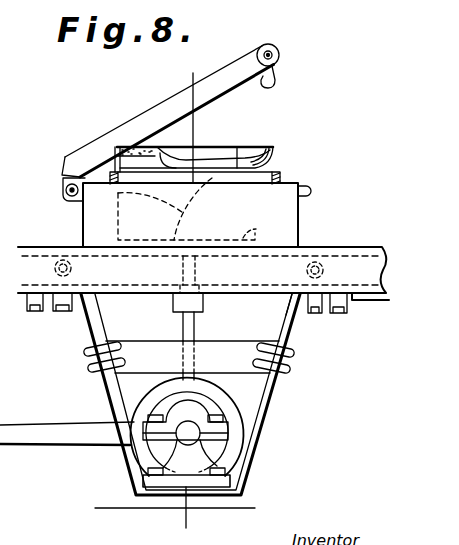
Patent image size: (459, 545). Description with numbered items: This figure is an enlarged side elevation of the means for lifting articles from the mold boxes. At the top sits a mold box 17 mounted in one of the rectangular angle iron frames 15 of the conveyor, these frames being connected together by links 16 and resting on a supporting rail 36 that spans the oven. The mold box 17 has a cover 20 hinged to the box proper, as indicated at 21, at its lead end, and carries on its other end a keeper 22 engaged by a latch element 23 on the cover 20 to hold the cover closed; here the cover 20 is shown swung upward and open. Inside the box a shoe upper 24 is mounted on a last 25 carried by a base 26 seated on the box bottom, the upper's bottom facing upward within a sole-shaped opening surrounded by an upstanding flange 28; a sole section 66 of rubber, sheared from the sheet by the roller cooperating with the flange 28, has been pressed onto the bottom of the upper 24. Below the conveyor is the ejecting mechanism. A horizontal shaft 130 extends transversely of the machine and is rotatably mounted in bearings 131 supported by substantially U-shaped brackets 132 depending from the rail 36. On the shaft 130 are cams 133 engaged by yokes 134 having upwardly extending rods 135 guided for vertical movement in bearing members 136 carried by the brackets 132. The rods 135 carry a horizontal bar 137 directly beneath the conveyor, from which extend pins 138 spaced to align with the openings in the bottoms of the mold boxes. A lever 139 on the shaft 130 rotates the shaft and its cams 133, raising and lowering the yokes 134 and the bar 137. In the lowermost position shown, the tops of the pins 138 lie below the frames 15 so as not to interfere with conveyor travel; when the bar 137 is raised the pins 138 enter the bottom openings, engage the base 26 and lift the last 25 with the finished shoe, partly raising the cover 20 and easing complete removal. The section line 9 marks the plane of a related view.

The section line 9 is at (175, 299).
The cover 20 is at (150, 113).
The latch element 23 is at (281, 77).
The hinge 21 is at (65, 190).
The mold box 17 is at (285, 230).
The keeper 22 is at (309, 191).
The sole section 66 is at (214, 147).
The shoe upper 24 is at (272, 160).
The flange 28 is at (125, 184).
The last 25 is at (165, 225).
The base 26 is at (192, 216).
The rail 36 is at (51, 247).
The link 16 is at (345, 309).
The pin 138 is at (200, 270).
The horizontal bar 137 is at (173, 303).
The rod 135 is at (196, 325).
The bearing member 136 is at (192, 357).
The yoke 134 is at (133, 403).
The bracket 132 is at (268, 397).
The angle iron frame 15 is at (291, 297).
The cam 133 is at (187, 427).
The bearing 131 is at (238, 458).
The shaft 130 is at (188, 441).
The lever 139 is at (72, 438).